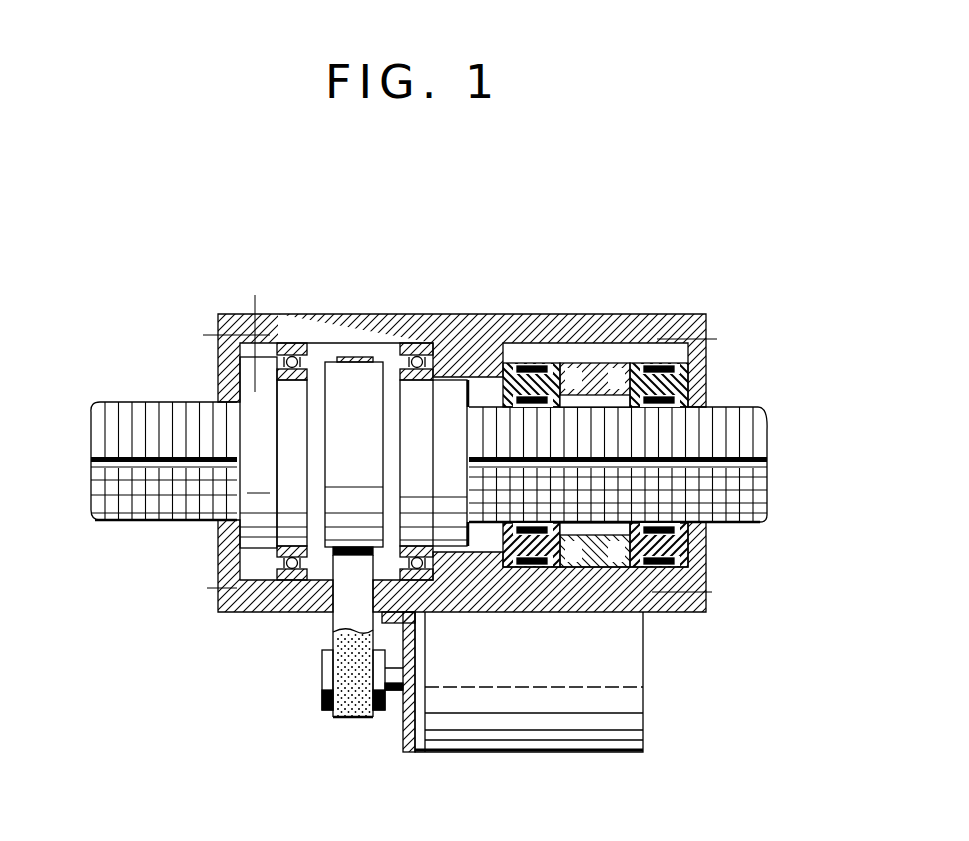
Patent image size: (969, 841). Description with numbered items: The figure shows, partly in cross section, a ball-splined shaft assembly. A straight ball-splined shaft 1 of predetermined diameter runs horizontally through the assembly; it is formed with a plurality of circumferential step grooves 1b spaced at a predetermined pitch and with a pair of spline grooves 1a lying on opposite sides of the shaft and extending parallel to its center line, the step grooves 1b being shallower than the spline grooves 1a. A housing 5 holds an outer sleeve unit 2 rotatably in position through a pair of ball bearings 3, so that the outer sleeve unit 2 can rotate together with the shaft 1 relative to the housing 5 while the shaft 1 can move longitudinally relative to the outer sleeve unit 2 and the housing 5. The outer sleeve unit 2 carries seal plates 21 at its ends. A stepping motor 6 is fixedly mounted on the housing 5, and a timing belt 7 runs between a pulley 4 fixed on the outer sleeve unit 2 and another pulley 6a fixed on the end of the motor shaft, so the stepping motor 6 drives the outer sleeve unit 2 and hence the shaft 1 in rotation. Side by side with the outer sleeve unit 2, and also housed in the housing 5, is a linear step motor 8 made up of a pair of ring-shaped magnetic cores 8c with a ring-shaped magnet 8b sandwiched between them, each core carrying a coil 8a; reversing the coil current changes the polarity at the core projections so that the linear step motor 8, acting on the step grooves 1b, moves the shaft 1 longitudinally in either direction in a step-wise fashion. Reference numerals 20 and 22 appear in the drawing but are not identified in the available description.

The ball-splined shaft 1 is at (437, 414).
The spline grooves 1a is at (760, 470).
The circumferential step grooves 1b is at (107, 428).
The outer sleeve unit 2 is at (253, 296).
The ball bearings 3 is at (288, 597).
The pulley 4 is at (321, 392).
The housing 5 is at (398, 318).
The stepping motor 6 is at (627, 675).
The pulley 6a is at (327, 678).
The timing belt 7 is at (355, 714).
The linear step motor 8 is at (595, 390).
The coil 8a is at (525, 363).
The ring-shaped magnet 8b is at (592, 363).
The ring-shaped magnetic cores 8c is at (659, 416).
The rotor hub 20 is at (227, 488).
The seal plates 21 is at (228, 363).
The bearing support 22 is at (486, 578).